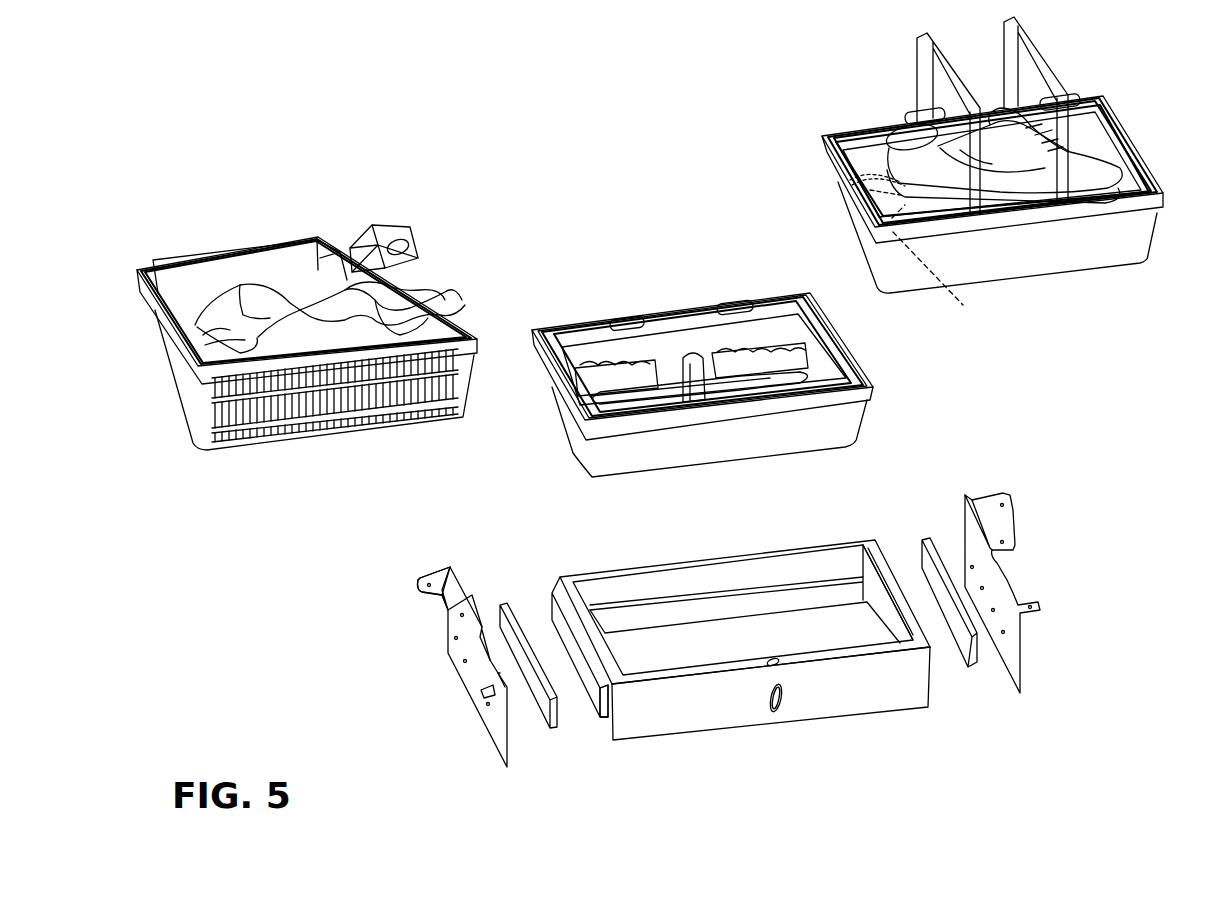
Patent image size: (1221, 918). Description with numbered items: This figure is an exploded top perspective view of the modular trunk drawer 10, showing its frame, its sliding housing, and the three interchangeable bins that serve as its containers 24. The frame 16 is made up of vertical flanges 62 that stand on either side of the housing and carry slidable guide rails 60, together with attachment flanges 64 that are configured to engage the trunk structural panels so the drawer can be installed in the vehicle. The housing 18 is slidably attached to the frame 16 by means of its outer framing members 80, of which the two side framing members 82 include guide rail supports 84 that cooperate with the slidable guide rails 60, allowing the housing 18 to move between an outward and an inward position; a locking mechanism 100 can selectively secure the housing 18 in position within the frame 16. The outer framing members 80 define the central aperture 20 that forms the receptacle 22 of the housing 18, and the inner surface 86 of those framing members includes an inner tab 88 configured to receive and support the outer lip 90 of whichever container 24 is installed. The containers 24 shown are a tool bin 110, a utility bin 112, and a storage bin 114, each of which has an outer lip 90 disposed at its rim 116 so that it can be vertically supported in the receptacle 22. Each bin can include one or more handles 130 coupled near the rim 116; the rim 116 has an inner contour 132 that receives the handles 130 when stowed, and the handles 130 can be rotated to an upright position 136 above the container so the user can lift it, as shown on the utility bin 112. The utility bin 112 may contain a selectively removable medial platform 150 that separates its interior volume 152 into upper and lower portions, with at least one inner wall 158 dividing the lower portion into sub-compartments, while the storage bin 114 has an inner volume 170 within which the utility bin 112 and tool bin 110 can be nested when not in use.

The modular trunk drawer 10 is at (293, 82).
The frame 16 is at (405, 701).
The housing 18 is at (715, 737).
The central aperture 20 is at (600, 590).
The receptacle 22 is at (838, 588).
The container 24 is at (420, 230).
The slidable guide rail 60 is at (547, 712).
The vertical flange 62 is at (457, 648).
The attachment flange 64 is at (440, 578).
The outer framing member 80 is at (850, 712).
The side framing member 82 is at (608, 725).
The guide rail support 84 is at (555, 612).
The inner surface 86 is at (734, 587).
The inner tab 88 is at (768, 585).
The outer lip 90 is at (1187, 200).
The locking mechanism 100 is at (778, 662).
The tool bin 110 is at (845, 424).
The utility bin 112 is at (1057, 258).
The storage bin 114 is at (450, 400).
The rim 116 is at (873, 377).
The handle 130 is at (613, 330).
The inner contour 132 is at (672, 320).
The upright position 136 is at (1068, 83).
The medial platform 150 is at (873, 189).
The interior volume 152 is at (823, 133).
The inner wall 158 is at (970, 321).
The inner volume 170 is at (336, 228).